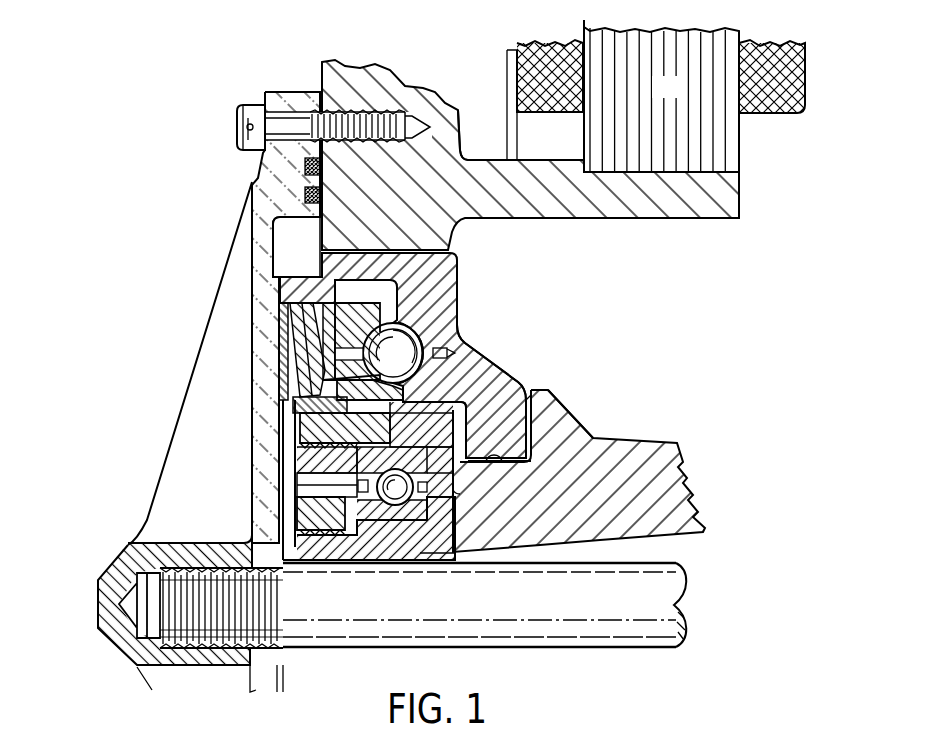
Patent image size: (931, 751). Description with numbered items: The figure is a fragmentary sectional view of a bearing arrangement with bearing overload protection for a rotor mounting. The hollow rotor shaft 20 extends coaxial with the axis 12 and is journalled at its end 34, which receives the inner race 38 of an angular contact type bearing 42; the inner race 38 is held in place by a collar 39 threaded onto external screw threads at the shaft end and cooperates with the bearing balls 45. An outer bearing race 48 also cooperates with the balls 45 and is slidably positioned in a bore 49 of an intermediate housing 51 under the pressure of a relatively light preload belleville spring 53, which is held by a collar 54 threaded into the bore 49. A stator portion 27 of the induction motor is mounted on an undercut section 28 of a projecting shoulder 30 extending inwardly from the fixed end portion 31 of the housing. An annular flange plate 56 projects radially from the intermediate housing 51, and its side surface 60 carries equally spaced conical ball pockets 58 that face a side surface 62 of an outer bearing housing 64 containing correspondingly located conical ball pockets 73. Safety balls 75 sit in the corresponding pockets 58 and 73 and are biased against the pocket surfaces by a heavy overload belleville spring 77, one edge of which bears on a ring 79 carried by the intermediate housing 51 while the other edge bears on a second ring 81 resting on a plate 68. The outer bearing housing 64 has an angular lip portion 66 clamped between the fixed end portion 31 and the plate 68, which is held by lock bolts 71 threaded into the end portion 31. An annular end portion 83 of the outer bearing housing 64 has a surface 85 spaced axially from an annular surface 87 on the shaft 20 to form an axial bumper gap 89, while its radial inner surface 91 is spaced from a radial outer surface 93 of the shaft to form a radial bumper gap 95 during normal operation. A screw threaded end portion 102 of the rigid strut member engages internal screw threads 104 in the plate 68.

The axis 12 is at (690, 605).
The rotor shaft 20 is at (628, 443).
The stator portion 27 is at (681, 99).
The undercut section 28 is at (742, 192).
The projecting shoulder 30 is at (463, 153).
The fixed end portion 31 is at (378, 82).
The end of rotor shaft 34 is at (368, 522).
The inner race 38 is at (437, 510).
The collar 39 is at (283, 525).
The angular contact type bearing 42 is at (300, 491).
The bearing balls 45 is at (397, 525).
The outer bearing race 48 is at (382, 452).
The bore 49 is at (378, 443).
The intermediate housing 51 is at (373, 408).
The preload belleville spring 53 is at (327, 488).
The collar 54 is at (313, 460).
The annular flange plate 56 is at (345, 310).
The conical ball pockets 58 is at (362, 335).
The side surface 60 is at (460, 297).
The side surface 62 is at (462, 305).
The outer bearing housing 64 is at (489, 379).
The angular lip portion 66 is at (273, 232).
The plate 68 is at (262, 278).
The lock bolts 71 is at (250, 105).
The conical ball pockets 73 is at (468, 350).
The safety balls 75 is at (467, 331).
The overload belleville spring 77 is at (300, 362).
The ring 79 is at (295, 410).
The second ring 81 is at (282, 330).
The annular end portion 83 is at (506, 436).
The surface 85 is at (522, 404).
The annular surface 87 is at (575, 409).
The axial bumper gap 89 is at (533, 392).
The radial inner surface 91 is at (522, 461).
The radial outer surface 93 is at (494, 461).
The radial bumper gap 95 is at (457, 488).
The screw threaded end portion 102 is at (217, 650).
The internal screw threads 104 is at (197, 565).